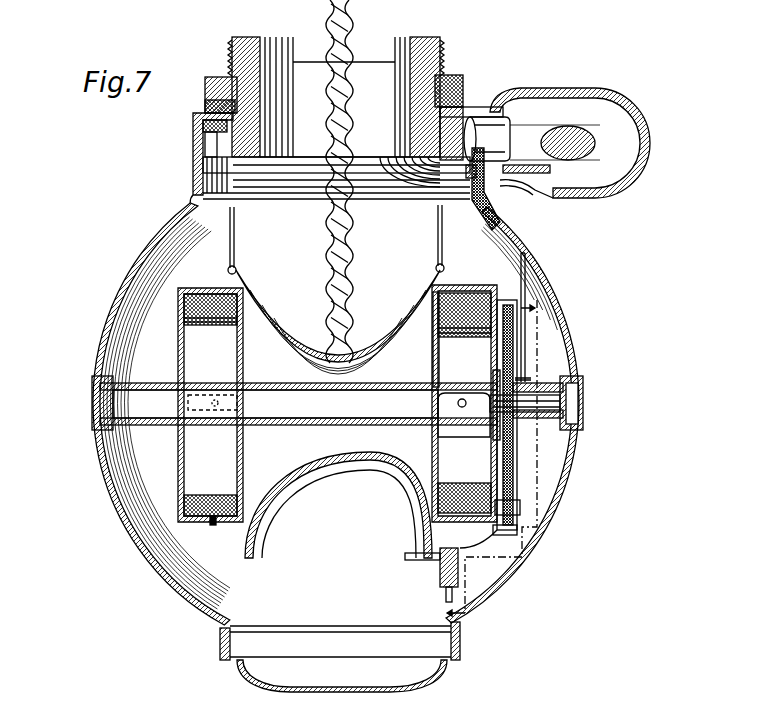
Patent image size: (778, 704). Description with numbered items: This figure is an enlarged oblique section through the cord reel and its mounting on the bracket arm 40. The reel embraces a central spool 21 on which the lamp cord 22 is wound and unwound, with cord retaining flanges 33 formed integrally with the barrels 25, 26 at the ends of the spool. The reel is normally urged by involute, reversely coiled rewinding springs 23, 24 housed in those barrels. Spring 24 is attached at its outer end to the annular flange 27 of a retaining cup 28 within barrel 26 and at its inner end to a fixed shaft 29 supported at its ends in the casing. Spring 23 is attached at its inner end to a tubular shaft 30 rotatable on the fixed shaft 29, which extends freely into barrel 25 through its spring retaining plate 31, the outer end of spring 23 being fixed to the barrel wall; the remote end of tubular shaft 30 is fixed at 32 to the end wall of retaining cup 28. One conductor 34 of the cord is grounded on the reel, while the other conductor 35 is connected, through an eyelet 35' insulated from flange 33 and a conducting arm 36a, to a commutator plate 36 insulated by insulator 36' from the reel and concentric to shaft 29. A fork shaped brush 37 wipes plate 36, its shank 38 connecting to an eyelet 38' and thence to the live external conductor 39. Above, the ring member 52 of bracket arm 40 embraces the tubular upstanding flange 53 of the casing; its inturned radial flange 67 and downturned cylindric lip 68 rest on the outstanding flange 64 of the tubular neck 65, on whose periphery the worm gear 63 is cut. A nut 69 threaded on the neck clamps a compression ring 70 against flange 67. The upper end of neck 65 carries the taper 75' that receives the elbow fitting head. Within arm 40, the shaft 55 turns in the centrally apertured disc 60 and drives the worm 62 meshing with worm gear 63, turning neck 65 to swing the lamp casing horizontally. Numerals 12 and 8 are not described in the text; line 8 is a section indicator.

The casing 12 is at (568, 478).
The taper 75' is at (336, 85).
The nut 69 is at (220, 80).
The compression ring 70 is at (210, 104).
The inturned radial flange 67 is at (193, 115).
The downturned cylindric lip 68 is at (203, 126).
The ring member 52 is at (205, 144).
The worm gear 63 is at (197, 175).
The tubular upstanding flange 53 is at (236, 176).
The tubular neck 65 is at (440, 75).
The flange 64 is at (440, 152).
The centrally apertured disc 60 is at (485, 125).
The bracket arm 40 is at (500, 93).
The shaft 55 is at (590, 152).
The conductor 39 is at (540, 170).
The shank 38 is at (522, 199).
The eyelet 38' is at (430, 193).
The worm 62 is at (396, 170).
The lamp cord 22 is at (350, 250).
The cord retaining flange 33 is at (443, 246).
The central spool 21 is at (350, 352).
The fixing point 32 is at (420, 380).
The rewinding spring 23 is at (244, 455).
The rewinding spring 24 is at (432, 453).
The retaining cup 28 is at (432, 370).
The barrel 26 is at (472, 292).
The spring retaining plate 31 is at (244, 486).
The barrel 25 is at (205, 532).
The tubular shaft 30 is at (262, 388).
The fixed shaft 29 is at (580, 378).
The commutator plate 36 is at (534, 424).
The insulator 36' is at (548, 511).
The conducting arm 36a is at (512, 530).
The fork shaped brush 37 is at (530, 290).
The section line 8 is at (495, 458).
The conductor 34 is at (278, 520).
The conductor 35 is at (339, 514).
The eyelet 35' is at (416, 566).
The annular flange 27 is at (462, 538).